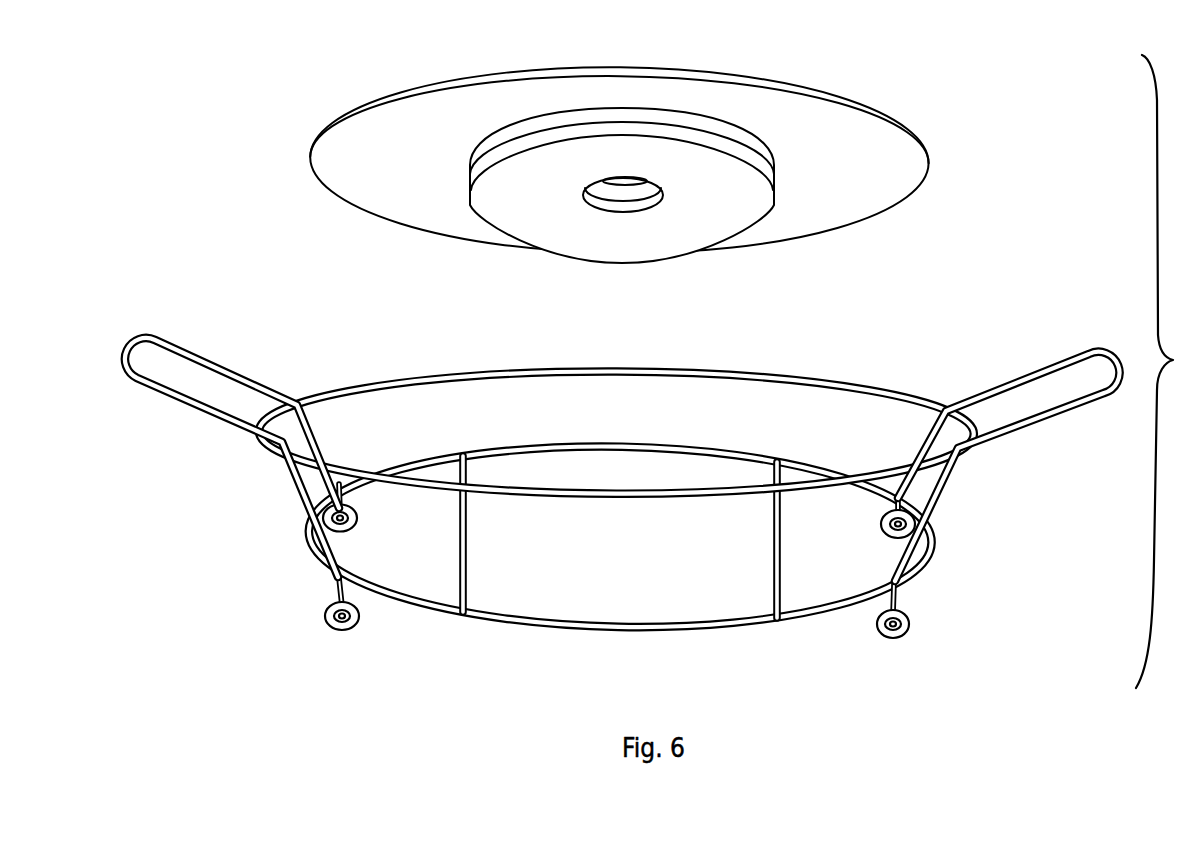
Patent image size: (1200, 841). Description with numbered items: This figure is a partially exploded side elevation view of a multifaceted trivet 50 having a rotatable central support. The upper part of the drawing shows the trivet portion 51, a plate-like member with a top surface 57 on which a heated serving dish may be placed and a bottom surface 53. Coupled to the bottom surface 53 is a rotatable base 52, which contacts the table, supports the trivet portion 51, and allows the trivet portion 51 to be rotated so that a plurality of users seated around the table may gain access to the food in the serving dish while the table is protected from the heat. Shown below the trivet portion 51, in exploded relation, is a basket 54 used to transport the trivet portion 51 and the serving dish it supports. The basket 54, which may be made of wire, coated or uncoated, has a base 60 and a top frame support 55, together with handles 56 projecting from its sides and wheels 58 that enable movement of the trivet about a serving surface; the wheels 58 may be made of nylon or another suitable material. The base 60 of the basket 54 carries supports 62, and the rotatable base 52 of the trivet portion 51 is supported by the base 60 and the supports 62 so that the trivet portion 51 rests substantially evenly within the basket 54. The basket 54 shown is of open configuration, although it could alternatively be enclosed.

The multifaceted trivet 50 is at (1167, 371).
The trivet portion 51 is at (656, 176).
The rotatable base 52 is at (668, 232).
The bottom surface 53 is at (630, 148).
The basket 54 is at (622, 496).
The top frame support 55 is at (893, 474).
The handles 56 is at (1047, 423).
The top surface 57 is at (423, 85).
The wheels 58 is at (908, 618).
The base 60 is at (818, 614).
The supports 62 is at (466, 560).